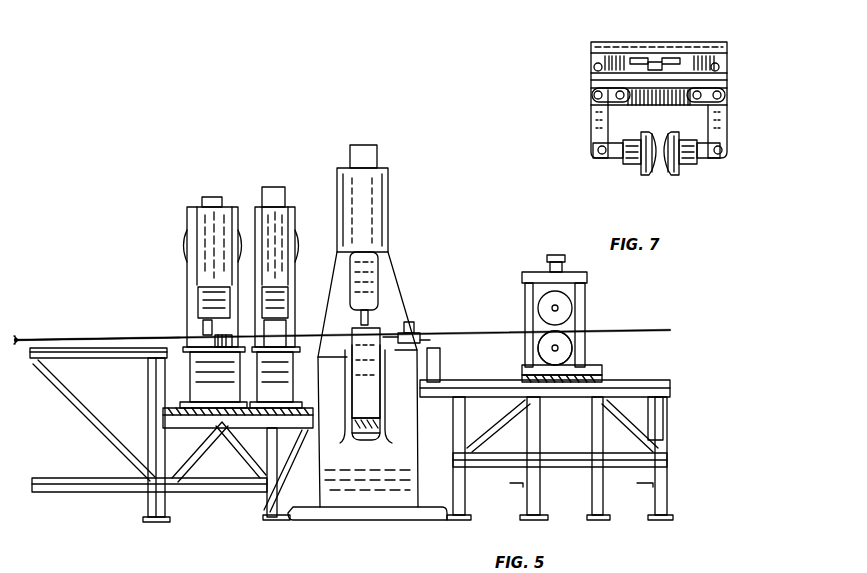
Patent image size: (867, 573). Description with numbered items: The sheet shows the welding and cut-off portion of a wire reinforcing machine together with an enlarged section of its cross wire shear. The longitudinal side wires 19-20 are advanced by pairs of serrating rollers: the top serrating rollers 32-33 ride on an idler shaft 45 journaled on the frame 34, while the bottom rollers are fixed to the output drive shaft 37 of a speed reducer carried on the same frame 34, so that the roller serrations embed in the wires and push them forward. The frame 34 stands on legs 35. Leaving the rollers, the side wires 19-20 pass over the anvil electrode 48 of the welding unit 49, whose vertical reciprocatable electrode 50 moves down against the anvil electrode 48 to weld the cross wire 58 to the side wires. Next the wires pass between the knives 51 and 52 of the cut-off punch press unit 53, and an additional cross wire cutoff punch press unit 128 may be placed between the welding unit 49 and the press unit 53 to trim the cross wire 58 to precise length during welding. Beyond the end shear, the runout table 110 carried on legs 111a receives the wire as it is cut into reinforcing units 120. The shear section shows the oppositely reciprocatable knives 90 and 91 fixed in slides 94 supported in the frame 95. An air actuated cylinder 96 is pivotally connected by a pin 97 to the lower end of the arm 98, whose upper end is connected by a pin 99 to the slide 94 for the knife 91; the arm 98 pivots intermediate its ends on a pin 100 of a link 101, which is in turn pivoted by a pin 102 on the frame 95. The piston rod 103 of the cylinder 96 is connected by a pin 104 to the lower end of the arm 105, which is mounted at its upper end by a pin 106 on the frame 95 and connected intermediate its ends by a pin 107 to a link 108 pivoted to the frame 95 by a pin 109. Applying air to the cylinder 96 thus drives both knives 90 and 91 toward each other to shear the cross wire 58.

In FIG. 5, the side wires 19-20 is at (668, 330).
In FIG. 5, the cutoff reinforcing units 120 is at (47, 339).
In FIG. 5, the runout table 110 is at (112, 362).
In FIG. 5, the legs 111a is at (150, 507).
In FIG. 5, the cut-off punch press unit 53 is at (214, 198).
In FIG. 5, the knife 52 is at (203, 332).
In FIG. 5, the knife 51 is at (215, 341).
In FIG. 5, the additional cross wire cutoff punch press unit 128 is at (278, 188).
In FIG. 5, the welding unit 49 is at (392, 188).
In FIG. 5, the vertical reciprocatable electrode 50 is at (361, 316).
In FIG. 5, the anvil electrode 48 is at (364, 332).
In FIG. 5, the cross wire 58 is at (405, 332).
In FIG. 5, the idler shaft 45 is at (528, 295).
In FIG. 5, the top serrating rollers 32-33 is at (560, 340).
In FIG. 5, the output drive shaft 37 is at (540, 348).
In FIG. 5, the frame 34 is at (497, 382).
In FIG. 5, the stand legs 35 is at (527, 503).
In FIG. 7, the frame 95 is at (722, 44).
In FIG. 7, the slides 94 is at (612, 52).
In FIG. 7, the knife 91 is at (640, 58).
In FIG. 7, the knife 90 is at (672, 60).
In FIG. 7, the pin 99 is at (594, 67).
In FIG. 7, the pin 106 is at (719, 67).
In FIG. 7, the pin 100 is at (594, 95).
In FIG. 7, the pin 107 is at (721, 95).
In FIG. 7, the link 101 is at (594, 97).
In FIG. 7, the link 108 is at (722, 97).
In FIG. 7, the arm 98 is at (598, 125).
In FIG. 7, the arm 105 is at (718, 125).
In FIG. 7, the pin 97 is at (596, 154).
In FIG. 7, the piston rod 103 is at (712, 154).
In FIG. 7, the pin 104 is at (722, 150).
In FIG. 7, the air actuated cylinder 96 is at (660, 172).
In FIG. 7, the pin 102 is at (616, 102).
In FIG. 7, the pin 109 is at (692, 100).